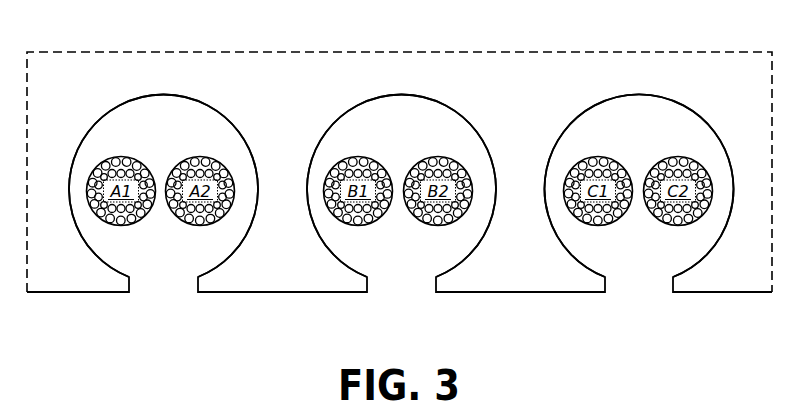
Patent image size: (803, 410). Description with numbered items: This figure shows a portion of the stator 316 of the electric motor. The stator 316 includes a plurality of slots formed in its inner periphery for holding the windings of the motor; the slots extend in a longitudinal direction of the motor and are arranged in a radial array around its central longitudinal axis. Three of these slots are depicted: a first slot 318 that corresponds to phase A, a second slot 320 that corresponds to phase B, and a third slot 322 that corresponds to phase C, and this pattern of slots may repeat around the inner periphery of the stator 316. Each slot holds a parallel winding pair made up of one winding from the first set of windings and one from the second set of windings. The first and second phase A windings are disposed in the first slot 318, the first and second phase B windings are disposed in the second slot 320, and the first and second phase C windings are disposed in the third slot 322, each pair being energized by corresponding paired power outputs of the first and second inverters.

The stator 316 is at (703, 52).
The first slot 318 is at (94, 128).
The second slot 320 is at (332, 128).
The third slot 322 is at (570, 128).